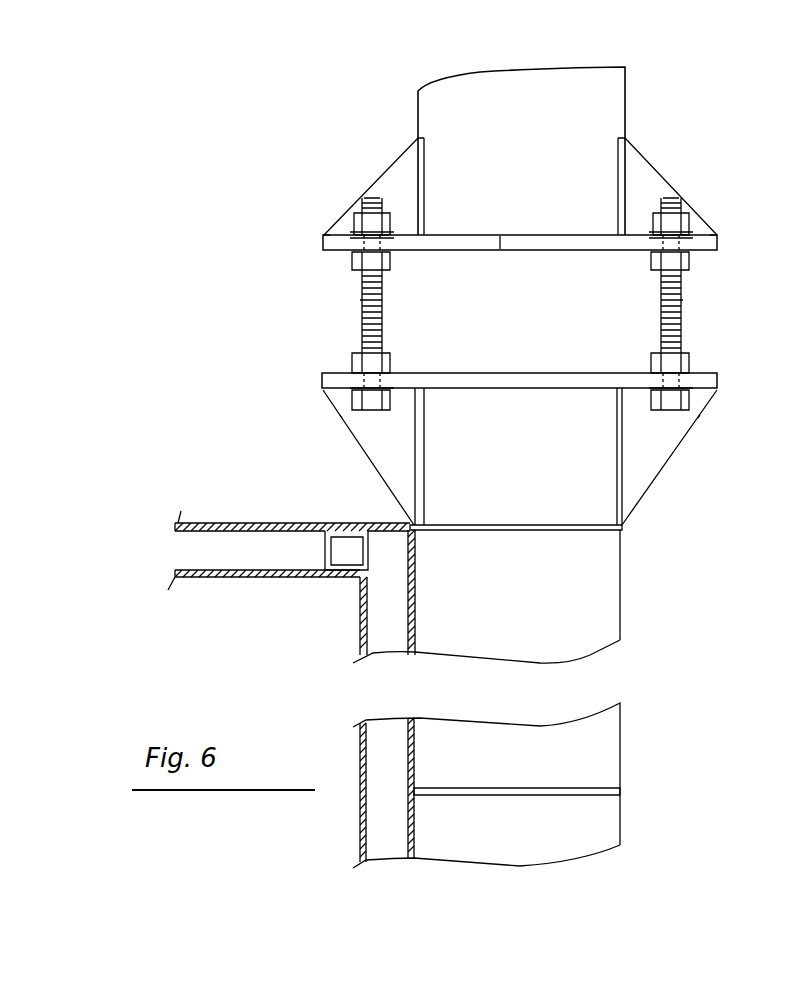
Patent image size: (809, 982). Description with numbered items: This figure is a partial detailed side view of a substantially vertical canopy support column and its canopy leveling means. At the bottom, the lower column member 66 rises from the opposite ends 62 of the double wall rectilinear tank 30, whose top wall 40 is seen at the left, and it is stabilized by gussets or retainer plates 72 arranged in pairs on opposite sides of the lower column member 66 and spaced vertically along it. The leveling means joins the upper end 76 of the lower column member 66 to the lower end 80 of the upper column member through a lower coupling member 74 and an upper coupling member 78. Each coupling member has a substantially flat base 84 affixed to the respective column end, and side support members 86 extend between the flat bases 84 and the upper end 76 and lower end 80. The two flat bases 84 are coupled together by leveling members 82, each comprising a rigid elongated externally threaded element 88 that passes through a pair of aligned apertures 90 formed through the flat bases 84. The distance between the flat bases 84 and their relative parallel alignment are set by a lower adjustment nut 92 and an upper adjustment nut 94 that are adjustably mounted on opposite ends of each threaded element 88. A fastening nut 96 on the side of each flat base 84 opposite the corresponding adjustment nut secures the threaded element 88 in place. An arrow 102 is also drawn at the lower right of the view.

The double wall rectilinear tank 30 is at (486, 785).
The top wall 40 is at (270, 523).
The opposite ends 62 is at (418, 555).
The lower column member 66 is at (577, 638).
The gusset or retainer plate 72 is at (570, 532).
The lower coupling member 74 is at (336, 440).
The upper end 76 is at (497, 423).
The upper coupling member 78 is at (358, 155).
The lower end 80 is at (505, 212).
The leveling member 82 is at (330, 291).
The substantially flat base 84 is at (575, 250).
The side support member 86 is at (408, 158).
The rigid elongated externally threaded element 88 is at (360, 316).
The aligned apertures 90 is at (366, 240).
The lower adjustment means or nut 92 is at (393, 362).
The upper adjustment means or nut 94 is at (393, 262).
The fastening means or nut 96 is at (366, 238).
The direction arrow 102 is at (803, 672).